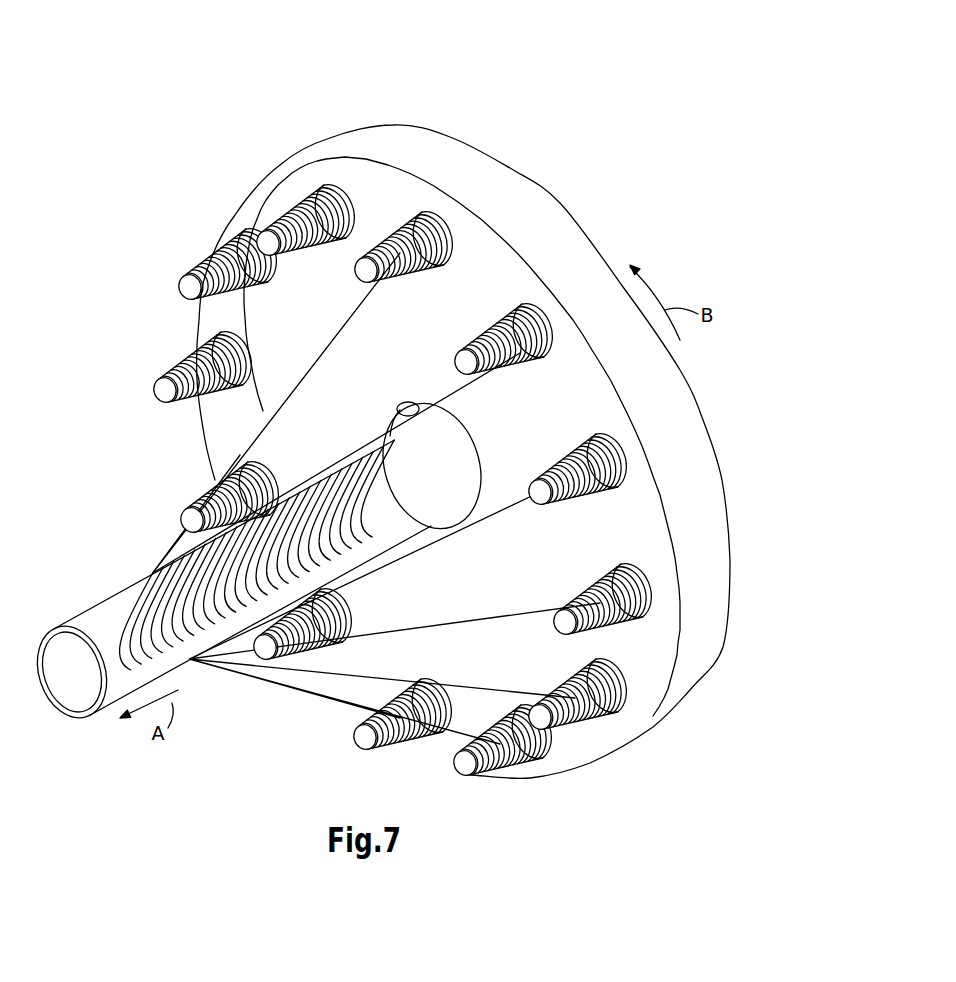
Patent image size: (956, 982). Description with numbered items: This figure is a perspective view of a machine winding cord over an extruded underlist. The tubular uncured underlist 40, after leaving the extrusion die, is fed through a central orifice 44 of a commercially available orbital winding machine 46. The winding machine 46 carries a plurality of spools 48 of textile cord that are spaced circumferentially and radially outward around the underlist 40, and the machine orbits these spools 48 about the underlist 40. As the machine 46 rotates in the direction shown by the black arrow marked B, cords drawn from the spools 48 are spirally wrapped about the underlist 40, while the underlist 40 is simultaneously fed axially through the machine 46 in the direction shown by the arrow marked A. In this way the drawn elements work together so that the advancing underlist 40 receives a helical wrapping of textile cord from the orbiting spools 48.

The tubular uncured underlist 40 is at (100, 600).
The central orifice 44 is at (405, 345).
The orbital winding machine 46 is at (533, 265).
The spools of textile cord 48 is at (417, 250).